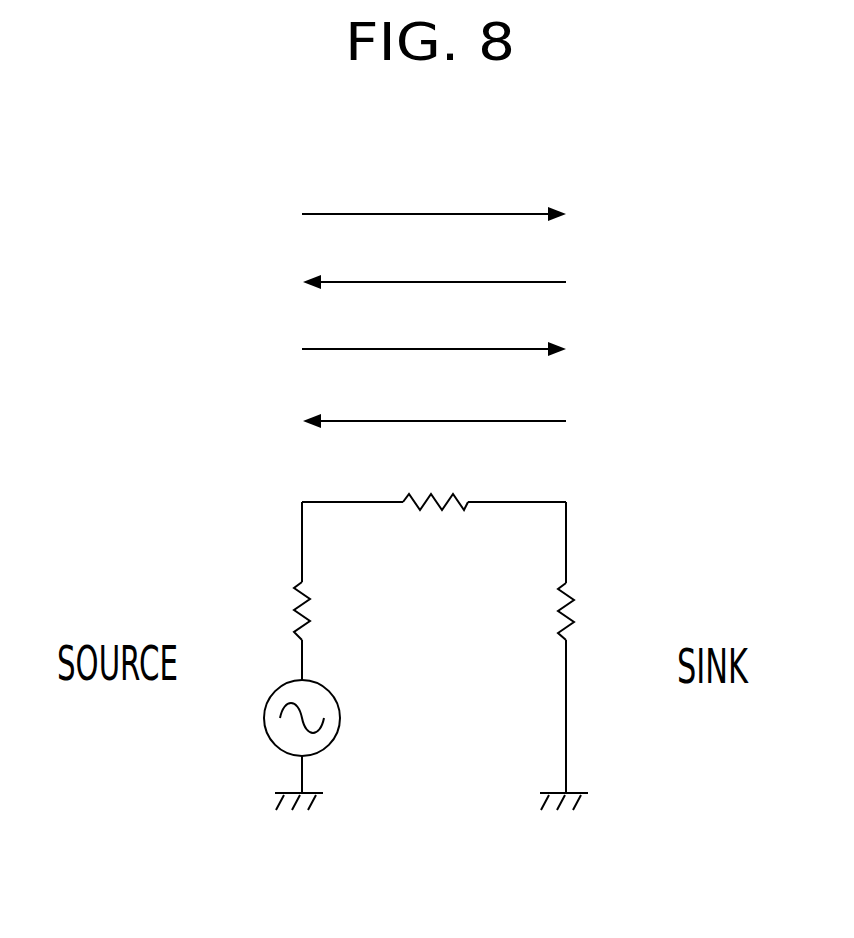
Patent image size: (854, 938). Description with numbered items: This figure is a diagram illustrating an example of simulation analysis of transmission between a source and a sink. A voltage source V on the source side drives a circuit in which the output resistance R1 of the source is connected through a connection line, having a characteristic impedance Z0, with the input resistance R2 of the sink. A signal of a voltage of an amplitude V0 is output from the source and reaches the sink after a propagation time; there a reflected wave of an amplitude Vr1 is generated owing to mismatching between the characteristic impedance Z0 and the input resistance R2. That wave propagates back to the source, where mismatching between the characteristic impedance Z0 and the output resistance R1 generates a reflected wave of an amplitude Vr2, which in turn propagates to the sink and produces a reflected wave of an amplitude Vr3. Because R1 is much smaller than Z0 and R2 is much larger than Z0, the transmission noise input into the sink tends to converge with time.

The amplitude of output signal voltage V0 is at (434, 192).
The amplitude of first reflected wave Vr1 is at (434, 260).
The amplitude of second reflected wave Vr2 is at (434, 327).
The amplitude of third reflected wave Vr3 is at (434, 399).
The characteristic impedance Z0 is at (434, 477).
The output resistance R1 is at (275, 612).
The input resistance R2 is at (595, 616).
The voltage source V is at (284, 718).